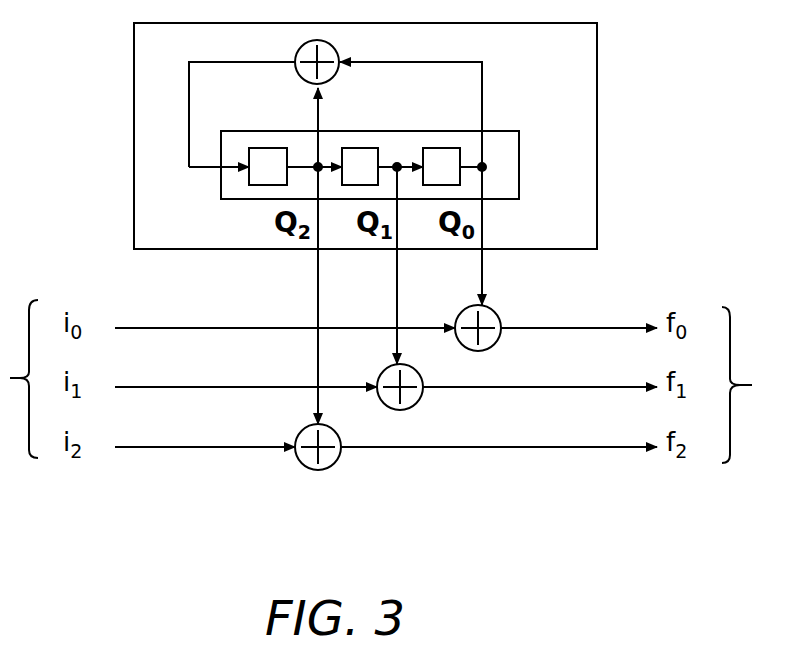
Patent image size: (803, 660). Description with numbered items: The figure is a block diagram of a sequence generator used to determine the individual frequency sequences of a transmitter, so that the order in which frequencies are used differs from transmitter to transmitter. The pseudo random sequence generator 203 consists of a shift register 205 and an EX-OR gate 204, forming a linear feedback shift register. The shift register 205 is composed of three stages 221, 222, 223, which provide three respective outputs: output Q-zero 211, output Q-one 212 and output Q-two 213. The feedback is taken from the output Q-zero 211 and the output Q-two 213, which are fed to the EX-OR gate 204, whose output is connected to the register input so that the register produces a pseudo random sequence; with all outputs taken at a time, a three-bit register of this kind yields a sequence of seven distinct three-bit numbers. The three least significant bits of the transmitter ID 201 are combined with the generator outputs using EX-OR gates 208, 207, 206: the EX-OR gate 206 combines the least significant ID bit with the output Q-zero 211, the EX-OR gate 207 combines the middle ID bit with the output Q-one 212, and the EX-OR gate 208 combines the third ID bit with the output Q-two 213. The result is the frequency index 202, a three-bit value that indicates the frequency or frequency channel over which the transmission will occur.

The three least significant bits of the transmitter ID 201 is at (32, 296).
The frequency index 202 is at (733, 306).
The pseudo random sequence generator 203 is at (134, 88).
The EX-OR gate 204 is at (296, 56).
The shift register 205 is at (507, 131).
The EX-OR gate 206 is at (497, 340).
The EX-OR gate 207 is at (418, 402).
The EX-OR gate 208 is at (336, 462).
The output Q0 211 is at (484, 262).
The output Q1 212 is at (442, 275).
The output Q2 213 is at (320, 262).
The stage 221 is at (436, 148).
The stage 222 is at (370, 148).
The stage 223 is at (275, 148).